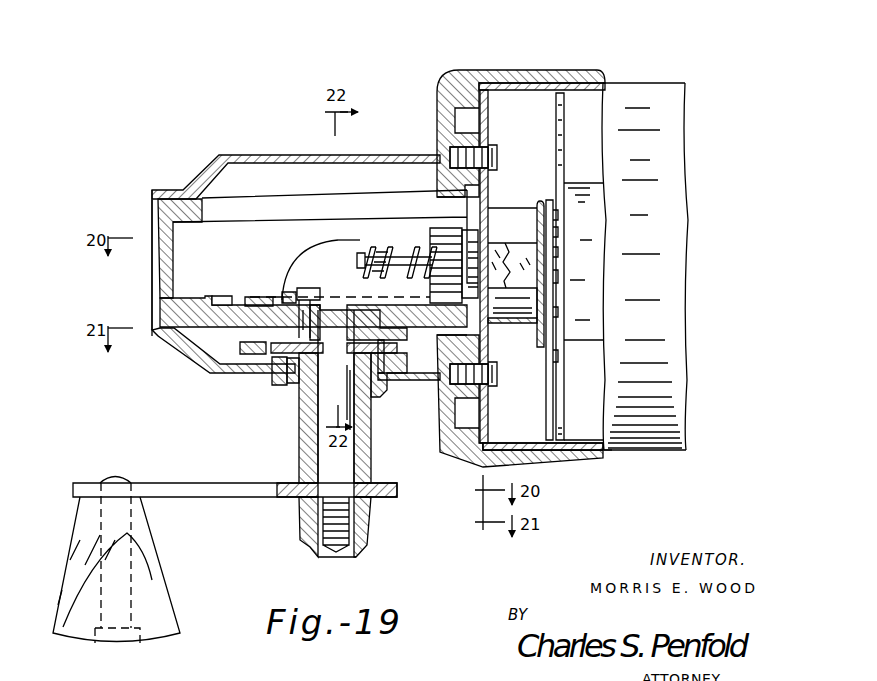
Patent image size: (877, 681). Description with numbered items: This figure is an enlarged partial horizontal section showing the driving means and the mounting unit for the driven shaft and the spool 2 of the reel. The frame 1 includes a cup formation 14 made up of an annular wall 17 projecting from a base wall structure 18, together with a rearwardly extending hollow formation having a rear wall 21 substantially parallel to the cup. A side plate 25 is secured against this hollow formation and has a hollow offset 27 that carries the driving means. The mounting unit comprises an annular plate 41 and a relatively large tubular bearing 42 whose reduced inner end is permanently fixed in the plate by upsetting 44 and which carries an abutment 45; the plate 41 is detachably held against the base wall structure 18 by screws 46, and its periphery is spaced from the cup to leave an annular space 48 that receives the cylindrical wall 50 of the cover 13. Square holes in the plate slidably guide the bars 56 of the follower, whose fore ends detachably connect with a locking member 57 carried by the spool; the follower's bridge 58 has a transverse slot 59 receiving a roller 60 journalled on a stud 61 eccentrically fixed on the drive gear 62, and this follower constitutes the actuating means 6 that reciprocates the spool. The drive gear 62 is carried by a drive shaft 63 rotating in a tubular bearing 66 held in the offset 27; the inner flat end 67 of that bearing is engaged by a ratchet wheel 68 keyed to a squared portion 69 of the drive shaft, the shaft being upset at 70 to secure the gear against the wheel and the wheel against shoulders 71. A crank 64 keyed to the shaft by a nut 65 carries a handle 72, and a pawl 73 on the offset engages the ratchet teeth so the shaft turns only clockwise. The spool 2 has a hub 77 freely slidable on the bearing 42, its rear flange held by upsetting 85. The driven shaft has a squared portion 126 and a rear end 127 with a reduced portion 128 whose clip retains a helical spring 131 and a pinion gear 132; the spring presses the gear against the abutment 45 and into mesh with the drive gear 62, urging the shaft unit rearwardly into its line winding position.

The frame 1 is at (172, 215).
The spool 2 is at (565, 136).
The actuating means 6 is at (286, 256).
The cover 13 is at (637, 82).
The cup formation 14 is at (583, 80).
The annular wall 17 is at (547, 68).
The base wall structure 18 is at (437, 112).
The rear wall 21 is at (153, 268).
The side plate 25 is at (170, 338).
The hollow offset 27 is at (230, 377).
The annular plate 41 is at (486, 120).
The tubular bearing 42 is at (505, 326).
The upsetting 44 is at (483, 311).
The abutment 45 is at (470, 246).
The screws 46 is at (446, 150).
The annular space 48 is at (492, 445).
The cylindrical wall 50 is at (612, 452).
The slidable bars 56 is at (314, 246).
The locking member 57 is at (547, 352).
The bridge 58 is at (252, 296).
The transverse slot 59 is at (280, 295).
The roller 60 is at (290, 290).
The stud 61 is at (312, 290).
The drive gear 62 is at (222, 294).
The drive shaft 63 is at (360, 470).
The crank 64 is at (250, 495).
The nut 65 is at (367, 533).
The tubular bearing 66 is at (300, 465).
The inner flat end 67 is at (310, 370).
The ratchet wheel 68 is at (283, 365).
The squared portion 69 is at (326, 345).
The upset 70 is at (352, 312).
The shoulders 71 is at (358, 370).
The handle 72 is at (150, 590).
The pawl 73 is at (240, 349).
The hub 77 is at (598, 224).
The upsetting 85 is at (555, 261).
The squared portion 126 is at (418, 250).
The rear end 127 is at (383, 258).
The reduced portion 128 is at (358, 262).
The helical spring 131 is at (396, 252).
The pinion gear 132 is at (452, 230).